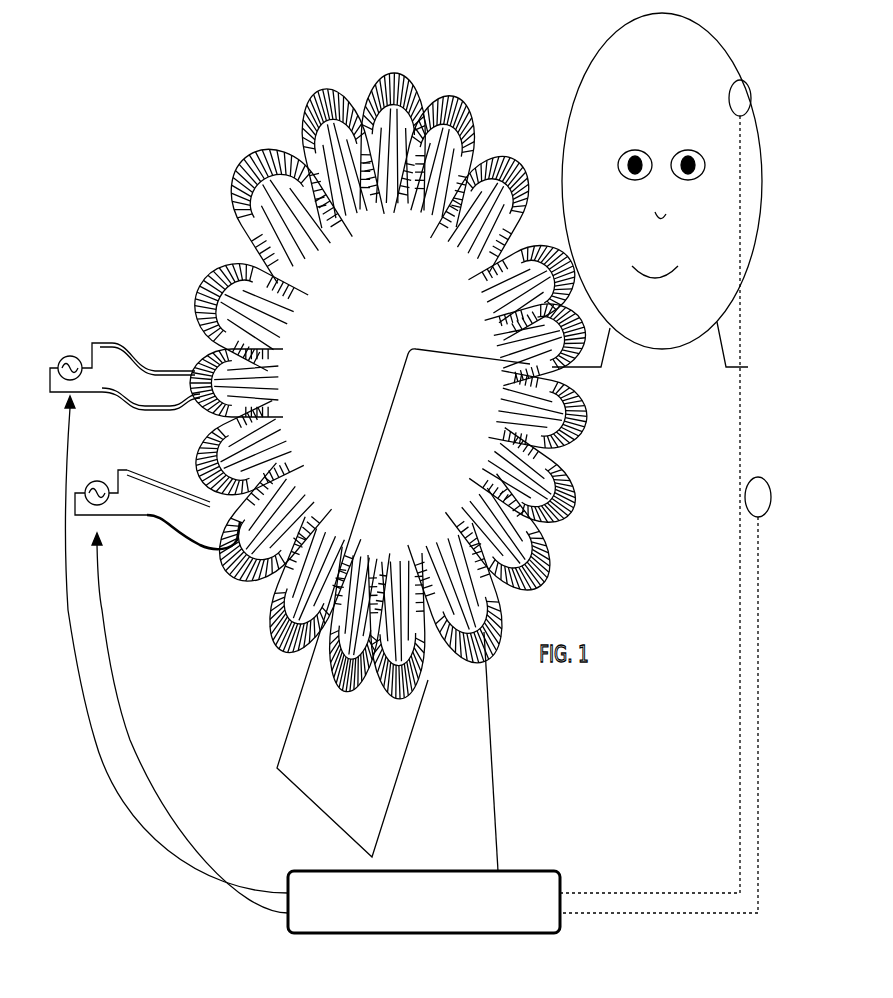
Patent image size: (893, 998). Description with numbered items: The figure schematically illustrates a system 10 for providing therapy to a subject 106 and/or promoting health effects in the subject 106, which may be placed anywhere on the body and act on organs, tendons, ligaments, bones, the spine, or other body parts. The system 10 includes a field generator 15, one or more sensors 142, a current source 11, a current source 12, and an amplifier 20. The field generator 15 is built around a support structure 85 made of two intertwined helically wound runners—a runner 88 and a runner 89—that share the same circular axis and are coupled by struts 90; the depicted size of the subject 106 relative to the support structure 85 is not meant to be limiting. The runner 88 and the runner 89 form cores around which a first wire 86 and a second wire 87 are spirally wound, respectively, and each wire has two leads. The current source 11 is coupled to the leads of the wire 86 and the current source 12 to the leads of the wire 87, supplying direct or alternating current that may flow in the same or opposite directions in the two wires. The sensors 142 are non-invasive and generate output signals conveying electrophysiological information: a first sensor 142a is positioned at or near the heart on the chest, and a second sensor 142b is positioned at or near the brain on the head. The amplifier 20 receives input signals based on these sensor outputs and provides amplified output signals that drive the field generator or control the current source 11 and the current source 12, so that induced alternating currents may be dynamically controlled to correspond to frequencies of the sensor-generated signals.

The system 10 is at (92, 898).
The current source 11 is at (71, 362).
The current source 12 is at (109, 484).
The field generator 15 is at (148, 882).
The amplifier 20 is at (411, 524).
The support structure 85 is at (384, 385).
The first wire 86 is at (278, 462).
The wire 87 is at (218, 465).
The runner 88 is at (200, 286).
The runner 89 is at (243, 182).
The struts 90 is at (280, 590).
The subject 106 is at (403, 603).
The sensors 142 is at (680, 273).
The sensor 142a is at (770, 505).
The sensor 142b is at (753, 91).